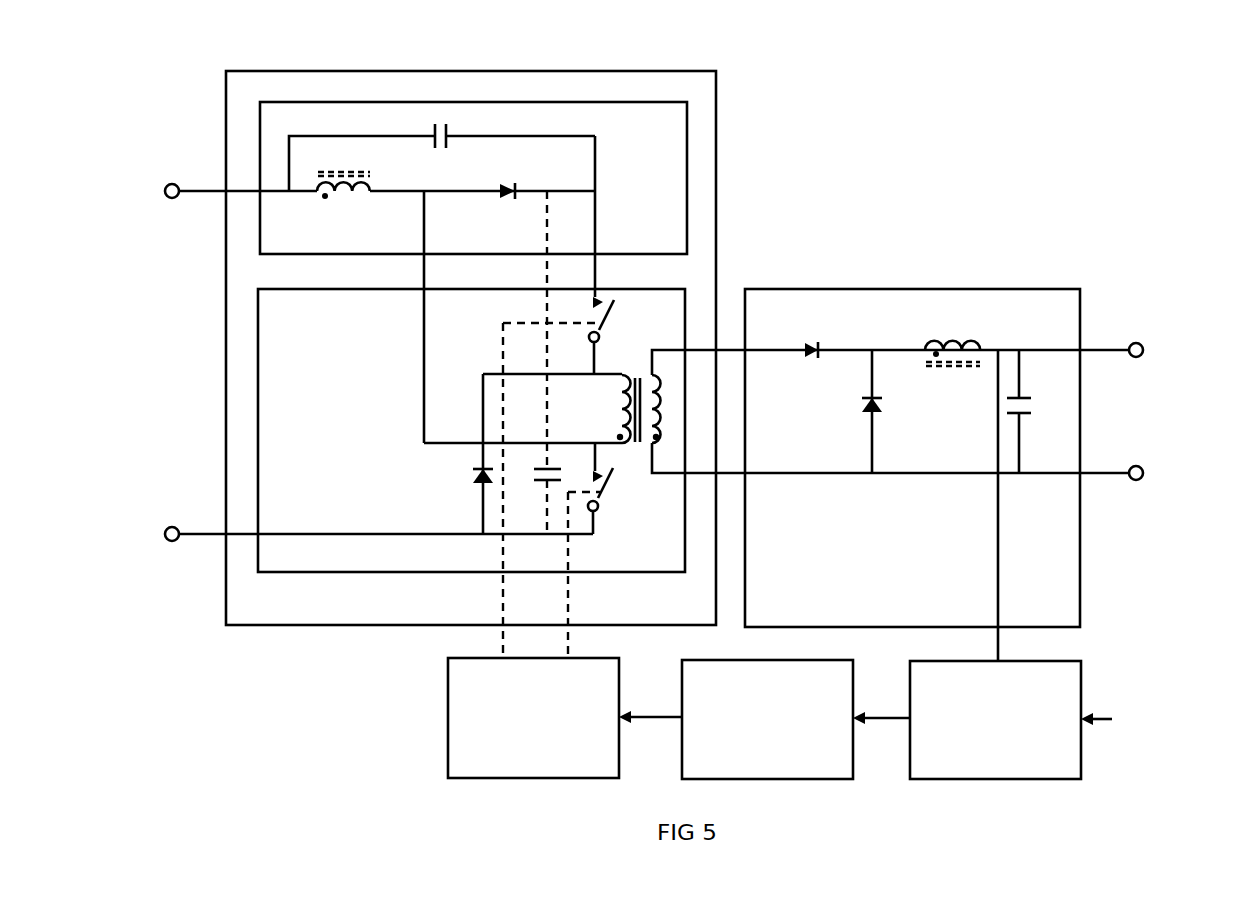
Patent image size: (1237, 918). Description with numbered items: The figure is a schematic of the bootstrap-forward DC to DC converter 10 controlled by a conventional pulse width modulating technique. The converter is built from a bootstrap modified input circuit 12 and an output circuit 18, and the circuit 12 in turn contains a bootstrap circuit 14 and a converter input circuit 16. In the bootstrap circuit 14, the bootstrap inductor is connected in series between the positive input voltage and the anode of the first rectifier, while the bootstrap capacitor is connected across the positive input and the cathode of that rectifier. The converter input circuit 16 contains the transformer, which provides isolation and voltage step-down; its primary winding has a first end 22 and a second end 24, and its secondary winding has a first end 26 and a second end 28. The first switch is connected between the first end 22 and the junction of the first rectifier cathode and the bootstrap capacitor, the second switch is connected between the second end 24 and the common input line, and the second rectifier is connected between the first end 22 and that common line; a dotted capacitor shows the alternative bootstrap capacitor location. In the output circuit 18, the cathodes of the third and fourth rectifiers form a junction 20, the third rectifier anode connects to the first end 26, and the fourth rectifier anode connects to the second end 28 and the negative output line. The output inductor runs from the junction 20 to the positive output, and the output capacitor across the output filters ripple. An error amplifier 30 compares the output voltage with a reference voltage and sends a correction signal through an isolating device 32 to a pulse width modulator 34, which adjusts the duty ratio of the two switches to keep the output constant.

The bootstrap-forward DC to DC converter 10 is at (917, 126).
The bootstrap modified input circuit 12 is at (485, 364).
The bootstrap circuit 14 is at (473, 178).
The converter input circuit 16 is at (501, 424).
The output circuit 18 is at (937, 475).
The junction 20 is at (874, 393).
The first end of the primary winding 22 is at (611, 358).
The second end of the primary winding 24 is at (610, 457).
The first end of the secondary winding 26 is at (698, 345).
The second end of the secondary winding 28 is at (698, 470).
The error amplifier 30 is at (995, 720).
The isolating device 32 is at (767, 719).
The pulse width modulator 34 is at (533, 718).